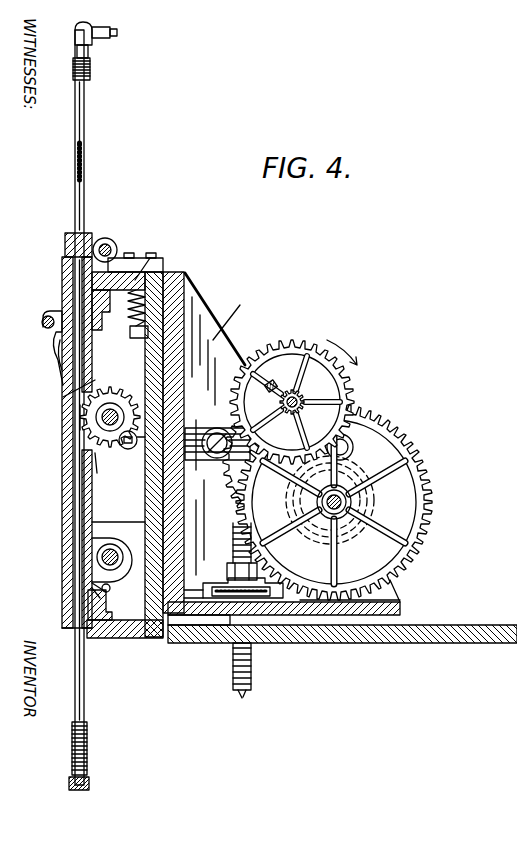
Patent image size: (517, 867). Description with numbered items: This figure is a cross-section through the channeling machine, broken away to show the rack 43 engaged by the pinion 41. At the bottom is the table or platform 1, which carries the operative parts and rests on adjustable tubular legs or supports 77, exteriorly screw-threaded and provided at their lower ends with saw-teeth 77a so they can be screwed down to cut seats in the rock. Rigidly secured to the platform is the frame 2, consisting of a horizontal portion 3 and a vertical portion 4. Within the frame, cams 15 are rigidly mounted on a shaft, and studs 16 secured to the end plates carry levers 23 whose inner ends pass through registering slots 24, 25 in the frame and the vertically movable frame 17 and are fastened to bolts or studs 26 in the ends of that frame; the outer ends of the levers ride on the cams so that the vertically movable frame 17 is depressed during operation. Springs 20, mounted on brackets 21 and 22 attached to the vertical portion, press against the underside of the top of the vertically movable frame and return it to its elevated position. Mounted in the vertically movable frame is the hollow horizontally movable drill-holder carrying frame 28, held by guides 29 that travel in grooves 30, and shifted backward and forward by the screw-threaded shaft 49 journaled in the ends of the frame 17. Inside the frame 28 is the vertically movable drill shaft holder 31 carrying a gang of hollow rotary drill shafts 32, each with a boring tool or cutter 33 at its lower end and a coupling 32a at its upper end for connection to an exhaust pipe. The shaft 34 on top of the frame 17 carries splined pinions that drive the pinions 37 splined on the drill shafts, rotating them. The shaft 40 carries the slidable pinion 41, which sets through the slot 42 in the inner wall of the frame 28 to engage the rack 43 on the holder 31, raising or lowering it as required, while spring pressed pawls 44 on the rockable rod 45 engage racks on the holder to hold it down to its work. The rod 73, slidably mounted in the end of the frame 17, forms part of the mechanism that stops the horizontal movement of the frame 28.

The table or platform 1 is at (425, 640).
The frame 2 is at (186, 598).
The horizontal portion 3 is at (400, 606).
The vertical portion 4 is at (186, 273).
The cams 15 is at (372, 524).
The studs 16 is at (242, 470).
The vertically movable frame 17 is at (145, 522).
The springs 20 is at (135, 280).
The bracket 21 is at (350, 448).
The bracket 22 is at (142, 338).
The levers 23 is at (200, 430).
The slot or opening 24 is at (200, 460).
The slot or opening 25 is at (147, 432).
The bolts or studs 26 is at (126, 448).
The horizontally movable drill-holder carrying frame 28 is at (62, 290).
The guides 29 is at (108, 312).
The grooves 30 is at (112, 272).
The vertically movable drill shaft holder 31 is at (90, 72).
The hollow rotary drill shafts 32 is at (88, 52).
The coupling 32a is at (78, 26).
The boring tool or cutter 33 is at (89, 784).
The shaft 34 is at (106, 246).
The pinions 37 is at (65, 247).
The shaft 40 is at (108, 420).
The pinion 41 is at (80, 410).
The slot or opening 42 is at (97, 470).
The rack 43 is at (80, 395).
The spring pressed pawls 44 is at (52, 338).
The rod 45 is at (42, 322).
The shaft 49 is at (108, 557).
The rod 73 is at (96, 588).
The adjustable tubular legs or supports 77 is at (252, 672).
The saw-teeth 77a is at (235, 702).